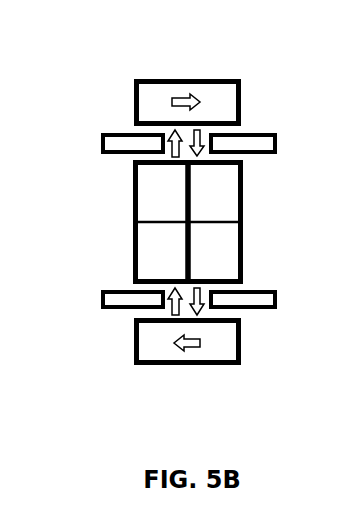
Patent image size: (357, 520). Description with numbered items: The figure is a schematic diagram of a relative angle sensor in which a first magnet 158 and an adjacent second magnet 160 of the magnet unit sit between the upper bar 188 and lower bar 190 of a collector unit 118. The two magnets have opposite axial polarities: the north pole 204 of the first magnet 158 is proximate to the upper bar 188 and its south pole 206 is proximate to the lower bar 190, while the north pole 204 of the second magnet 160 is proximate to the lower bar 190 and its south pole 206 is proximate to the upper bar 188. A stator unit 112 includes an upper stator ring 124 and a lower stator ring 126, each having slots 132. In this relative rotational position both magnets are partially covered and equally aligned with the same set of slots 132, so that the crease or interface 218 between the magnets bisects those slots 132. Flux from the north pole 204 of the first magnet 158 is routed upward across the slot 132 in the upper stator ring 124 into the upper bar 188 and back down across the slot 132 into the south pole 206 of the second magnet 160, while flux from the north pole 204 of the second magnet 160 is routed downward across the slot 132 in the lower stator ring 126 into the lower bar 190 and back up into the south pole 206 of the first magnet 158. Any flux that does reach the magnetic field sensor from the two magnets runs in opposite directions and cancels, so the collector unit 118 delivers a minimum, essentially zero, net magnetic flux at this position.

The stator unit 112 is at (157, 221).
The collector unit 118 is at (208, 72).
The upper stator ring 124 is at (92, 134).
The lower stator ring 126 is at (92, 309).
The slots 132 is at (159, 129).
The first magnet 158 is at (148, 205).
The second magnet 160 is at (230, 212).
The upper bar 188 is at (177, 79).
The lower bar 190 is at (193, 366).
The north pole 204 is at (152, 183).
The south pole 206 is at (220, 183).
The interface 218 is at (192, 227).